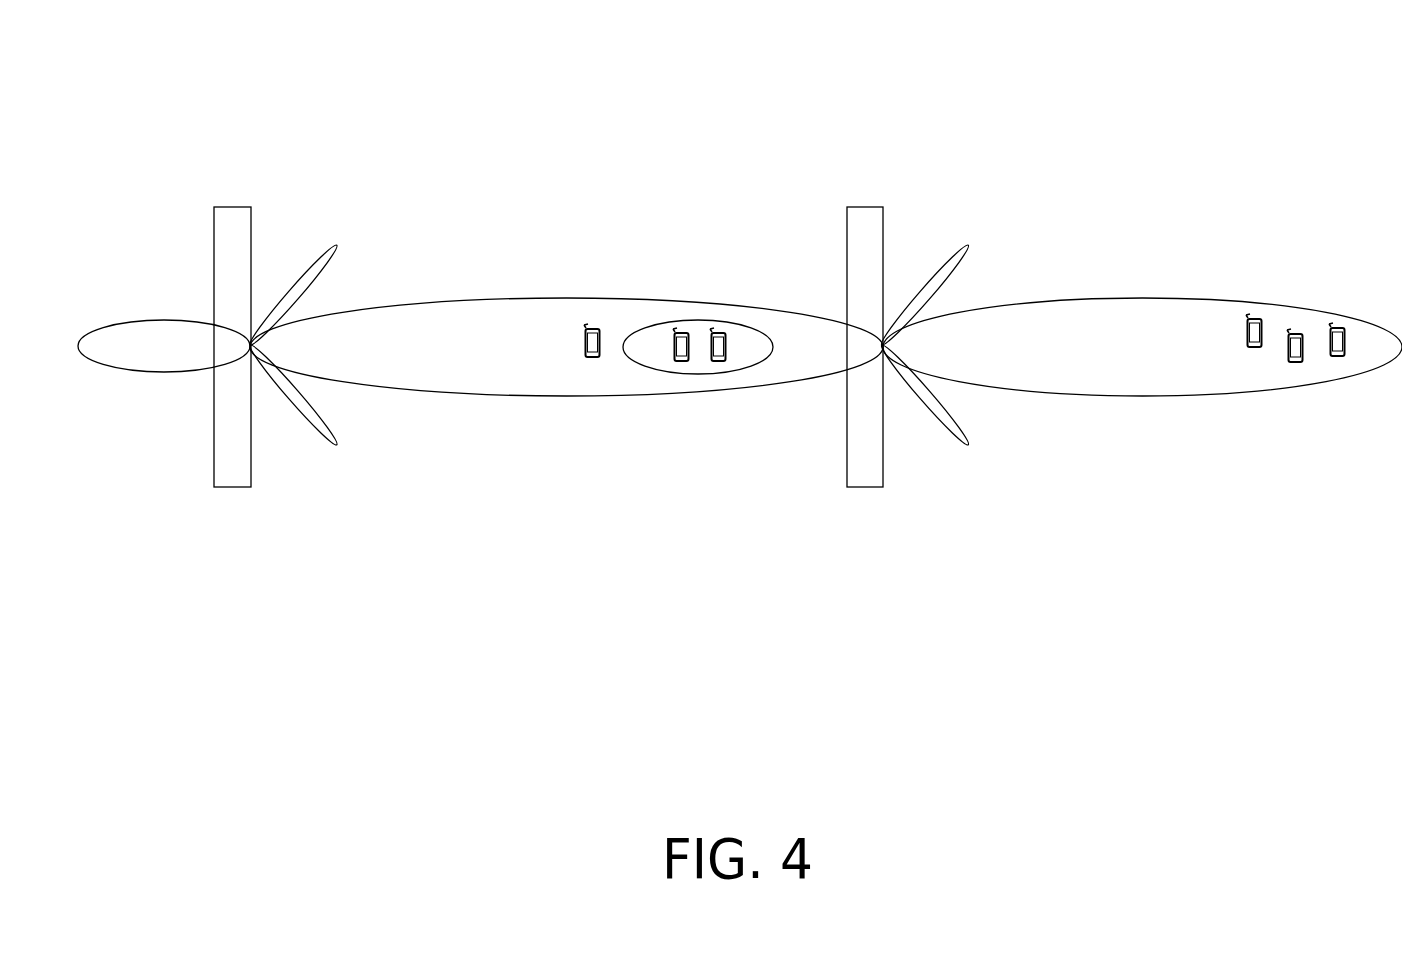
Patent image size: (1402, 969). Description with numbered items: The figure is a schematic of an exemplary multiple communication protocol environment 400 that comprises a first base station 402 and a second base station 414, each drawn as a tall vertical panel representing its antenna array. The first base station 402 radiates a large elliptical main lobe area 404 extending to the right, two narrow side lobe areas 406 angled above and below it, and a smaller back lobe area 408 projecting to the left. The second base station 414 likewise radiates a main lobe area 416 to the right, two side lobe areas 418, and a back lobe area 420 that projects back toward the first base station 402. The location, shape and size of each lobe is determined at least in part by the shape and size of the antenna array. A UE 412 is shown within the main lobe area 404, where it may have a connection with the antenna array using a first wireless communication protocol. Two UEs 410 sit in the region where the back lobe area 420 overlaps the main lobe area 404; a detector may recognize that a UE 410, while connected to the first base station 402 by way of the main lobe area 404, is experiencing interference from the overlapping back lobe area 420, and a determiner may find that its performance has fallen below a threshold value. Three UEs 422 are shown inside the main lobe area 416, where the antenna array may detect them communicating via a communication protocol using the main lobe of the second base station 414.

The multiple communication protocol environment 400 is at (117, 112).
The first base station 402 is at (232, 207).
The main lobe area 404 is at (656, 300).
The side lobe areas 406 is at (339, 245).
The back lobe area 408 is at (122, 318).
The UE 410 is at (721, 366).
The UE 412 is at (592, 361).
The second base station 414 is at (864, 207).
The main lobe area 416 is at (1290, 300).
The side lobe areas 418 is at (970, 245).
The back lobe area 420 is at (756, 318).
The UE 422 is at (1259, 353).